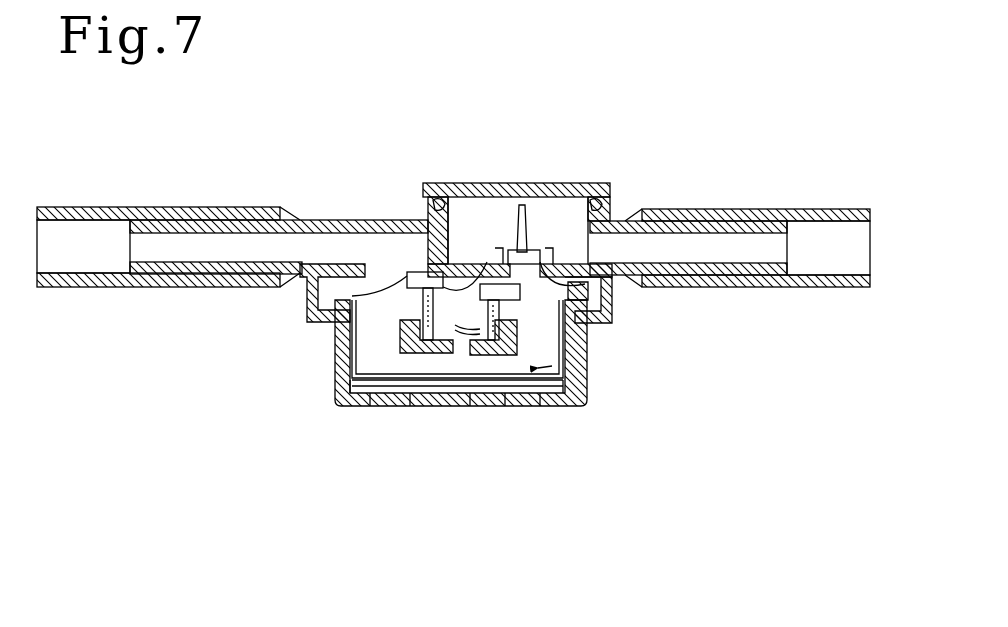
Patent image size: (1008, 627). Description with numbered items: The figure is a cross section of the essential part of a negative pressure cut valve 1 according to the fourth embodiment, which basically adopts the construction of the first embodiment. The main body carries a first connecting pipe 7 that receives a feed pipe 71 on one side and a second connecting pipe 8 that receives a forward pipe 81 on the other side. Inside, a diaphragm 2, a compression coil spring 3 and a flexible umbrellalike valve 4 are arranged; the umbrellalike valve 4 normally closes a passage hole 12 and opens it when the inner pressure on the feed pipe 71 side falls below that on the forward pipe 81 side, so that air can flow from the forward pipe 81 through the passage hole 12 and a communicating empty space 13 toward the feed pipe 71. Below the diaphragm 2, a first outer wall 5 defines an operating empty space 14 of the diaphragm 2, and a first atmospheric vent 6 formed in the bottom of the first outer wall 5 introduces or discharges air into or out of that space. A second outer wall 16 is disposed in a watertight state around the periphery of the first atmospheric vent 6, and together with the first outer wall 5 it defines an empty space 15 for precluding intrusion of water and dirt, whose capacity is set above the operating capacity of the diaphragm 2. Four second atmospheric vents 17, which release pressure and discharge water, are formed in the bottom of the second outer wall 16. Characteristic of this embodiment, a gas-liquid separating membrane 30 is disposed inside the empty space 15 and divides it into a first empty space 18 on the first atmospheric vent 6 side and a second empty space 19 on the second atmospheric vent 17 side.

The negative pressure cut valve 1 is at (540, 178).
The diaphragm 2 is at (437, 272).
The compression coil spring 3 is at (450, 272).
The flexible umbrellalike valve 4 is at (515, 250).
The first outer wall 5 is at (567, 356).
The first atmospheric vent 6 is at (462, 350).
The first connecting pipe 7 is at (192, 272).
The second connecting pipe 8 is at (732, 220).
The passage hole 12 is at (545, 257).
The communicating empty space 13 is at (604, 188).
The operating empty space 14 is at (588, 330).
The empty space for precluding intrusion 15 is at (577, 378).
The second outer wall 16 is at (517, 403).
The second atmospheric vents 17 is at (392, 405).
The first empty space 18 is at (373, 355).
The second empty space 19 is at (358, 388).
The gas-liquid separating membrane 30 is at (381, 383).
The feed pipe 71 is at (88, 212).
The forward pipe 81 is at (828, 216).